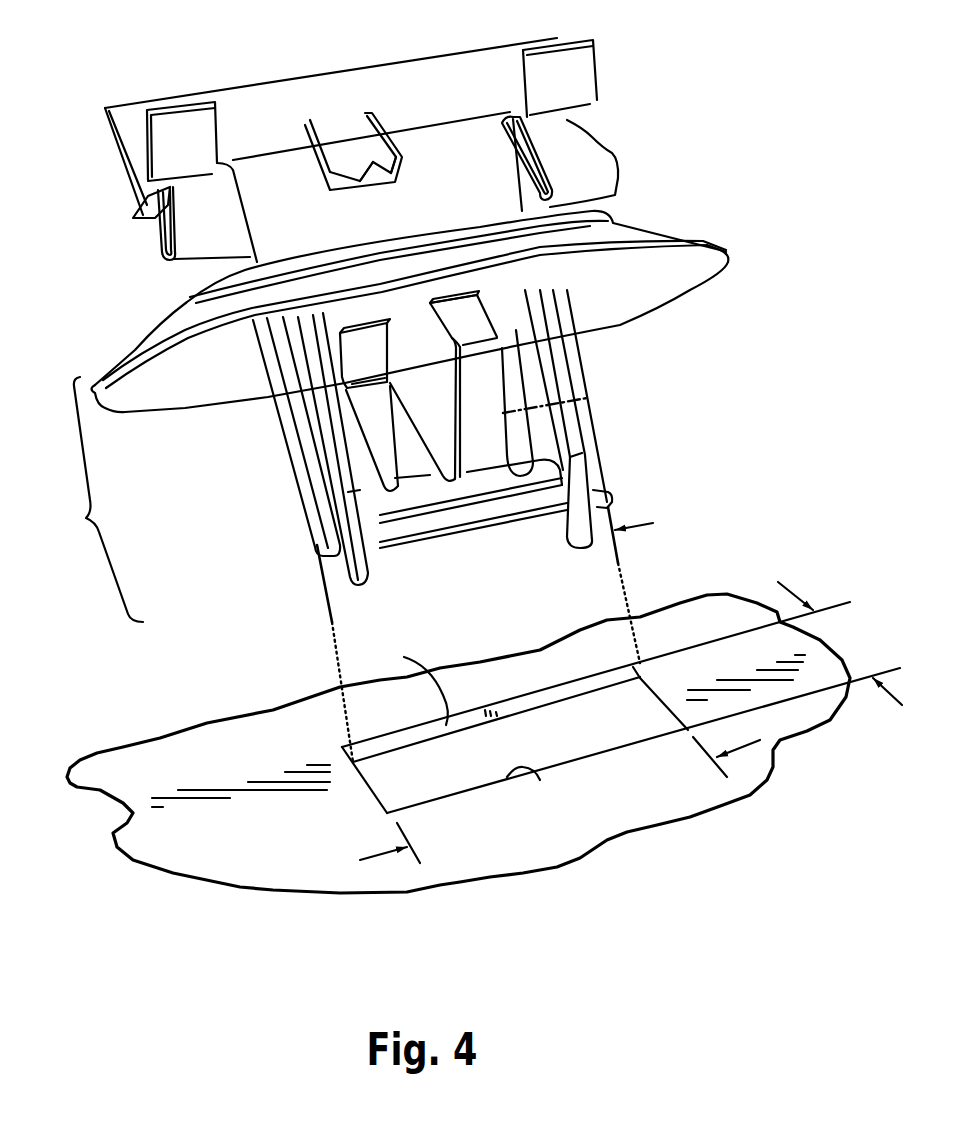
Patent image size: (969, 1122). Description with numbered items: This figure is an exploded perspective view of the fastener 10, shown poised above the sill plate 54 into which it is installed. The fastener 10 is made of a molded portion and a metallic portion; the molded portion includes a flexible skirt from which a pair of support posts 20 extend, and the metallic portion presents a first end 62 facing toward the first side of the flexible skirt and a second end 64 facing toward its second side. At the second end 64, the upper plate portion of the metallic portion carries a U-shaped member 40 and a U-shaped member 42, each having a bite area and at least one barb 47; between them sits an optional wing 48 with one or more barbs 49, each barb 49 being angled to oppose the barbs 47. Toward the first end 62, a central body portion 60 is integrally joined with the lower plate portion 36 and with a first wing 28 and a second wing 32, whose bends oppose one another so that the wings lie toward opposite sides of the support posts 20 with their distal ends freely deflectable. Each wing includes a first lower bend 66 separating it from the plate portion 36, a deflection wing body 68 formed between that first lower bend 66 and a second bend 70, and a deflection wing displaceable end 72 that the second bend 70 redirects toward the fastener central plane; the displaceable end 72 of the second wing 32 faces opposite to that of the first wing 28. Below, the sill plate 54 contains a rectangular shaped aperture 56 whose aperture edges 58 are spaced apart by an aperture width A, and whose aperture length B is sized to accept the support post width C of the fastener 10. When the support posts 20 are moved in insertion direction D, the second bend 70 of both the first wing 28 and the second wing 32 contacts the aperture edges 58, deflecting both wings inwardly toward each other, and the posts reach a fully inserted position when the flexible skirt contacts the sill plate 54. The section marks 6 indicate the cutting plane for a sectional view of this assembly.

The fastener 10 is at (118, 70).
The support posts 20 is at (303, 467).
The first wing 28 is at (473, 410).
The second wing 32 is at (393, 448).
The plate portion 36 is at (390, 523).
The U-shaped member 40 is at (185, 237).
The U-shaped member 42 is at (610, 178).
The barb 47 is at (143, 203).
The wing 48 is at (338, 128).
The barbs 49 is at (360, 167).
The sill plate 54 is at (212, 760).
The rectangular shaped aperture 56 is at (379, 791).
The aperture edges 58 is at (557, 892).
The central body portion 60 is at (337, 380).
The first end 62 is at (399, 396).
The second end 64 is at (287, 190).
The first lower bend 66 is at (493, 470).
The deflection wing body 68 is at (390, 383).
The second bend 70 is at (487, 330).
The deflection wing displaceable end 72 is at (465, 308).
The section line 6- 6 is at (504, 415).
The aperture width A is at (803, 592).
The aperture length B is at (740, 748).
The support post width C is at (319, 586).
The insertion direction D is at (632, 385).